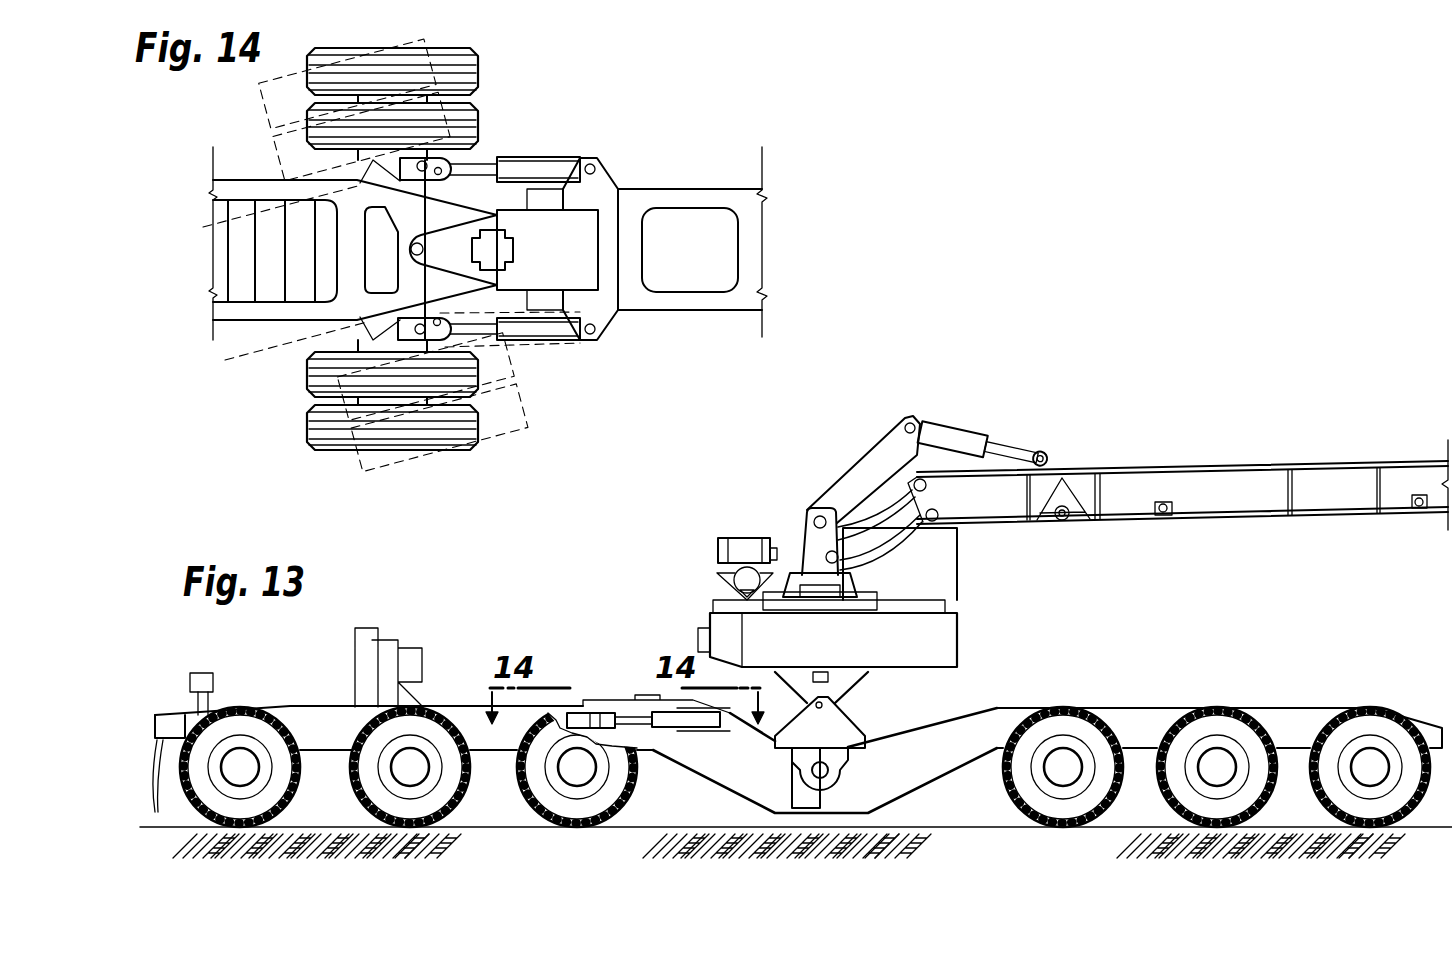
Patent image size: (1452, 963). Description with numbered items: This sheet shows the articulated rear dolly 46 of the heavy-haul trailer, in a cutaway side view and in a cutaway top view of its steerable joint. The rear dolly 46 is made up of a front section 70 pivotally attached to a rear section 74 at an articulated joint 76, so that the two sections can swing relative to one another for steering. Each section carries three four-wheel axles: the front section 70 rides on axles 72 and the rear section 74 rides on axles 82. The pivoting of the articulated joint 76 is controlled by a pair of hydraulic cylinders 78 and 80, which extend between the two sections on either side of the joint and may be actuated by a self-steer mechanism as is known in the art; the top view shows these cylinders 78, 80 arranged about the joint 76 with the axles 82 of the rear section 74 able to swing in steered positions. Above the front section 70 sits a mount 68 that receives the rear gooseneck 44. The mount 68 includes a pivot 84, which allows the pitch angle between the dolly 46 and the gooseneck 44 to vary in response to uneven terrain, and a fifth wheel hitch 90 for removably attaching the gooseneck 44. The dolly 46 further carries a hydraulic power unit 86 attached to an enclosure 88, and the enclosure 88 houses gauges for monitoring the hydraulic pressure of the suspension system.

In FIG. 13, the rear gooseneck 44 is at (1225, 468).
In FIG. 13, the rear dolly 46 is at (1150, 708).
In FIG. 13, the mount 68 is at (843, 735).
In FIG. 14, the front section 70 is at (678, 189).
In FIG. 13, the front section 70 is at (1300, 708).
In FIG. 13, the four-wheel axles 72 is at (1028, 793).
In FIG. 14, the rear section 74 is at (240, 322).
In FIG. 13, the rear section 74 is at (318, 705).
In FIG. 13, the articulated joint 76 is at (807, 765).
In FIG. 14, the hydraulic cylinder 78 is at (535, 342).
In FIG. 13, the hydraulic cylinder 78 is at (668, 724).
In FIG. 14, the hydraulic cylinder 80 is at (548, 165).
In FIG. 14, the four-wheel axles 82 is at (478, 56).
In FIG. 13, the four-wheel axles 82 is at (265, 805).
In FIG. 13, the pivot 84 is at (843, 713).
In FIG. 13, the hydraulic power unit 86 is at (742, 540).
In FIG. 13, the enclosure 88 is at (960, 632).
In FIG. 13, the fifth wheel hitch 90 is at (845, 585).